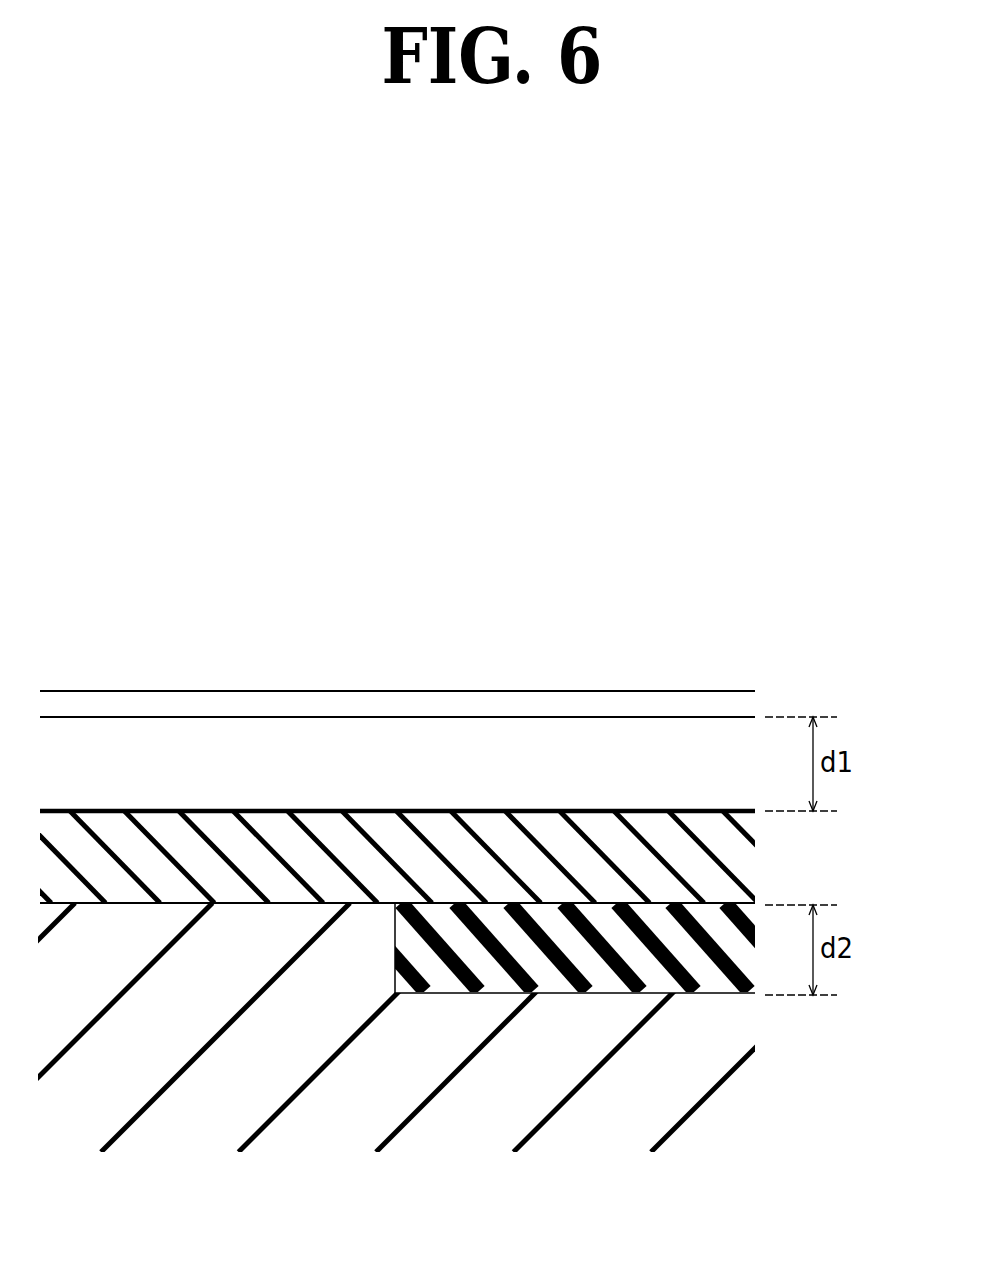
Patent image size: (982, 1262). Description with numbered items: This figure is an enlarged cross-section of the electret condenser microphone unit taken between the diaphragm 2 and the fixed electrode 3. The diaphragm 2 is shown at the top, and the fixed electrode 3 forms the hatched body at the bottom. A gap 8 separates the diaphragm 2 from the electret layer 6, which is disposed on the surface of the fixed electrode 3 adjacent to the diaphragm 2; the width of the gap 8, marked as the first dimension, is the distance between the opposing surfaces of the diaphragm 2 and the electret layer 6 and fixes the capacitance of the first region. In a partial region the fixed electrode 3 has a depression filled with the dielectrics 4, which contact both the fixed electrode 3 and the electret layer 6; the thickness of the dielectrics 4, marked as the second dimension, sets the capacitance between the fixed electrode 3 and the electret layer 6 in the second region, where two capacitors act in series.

The diaphragm 2 is at (640, 660).
The gap 8 is at (413, 780).
The electret layer 6 is at (413, 874).
The fixed electrode 3 is at (280, 1061).
The dielectrics 4 is at (775, 1043).